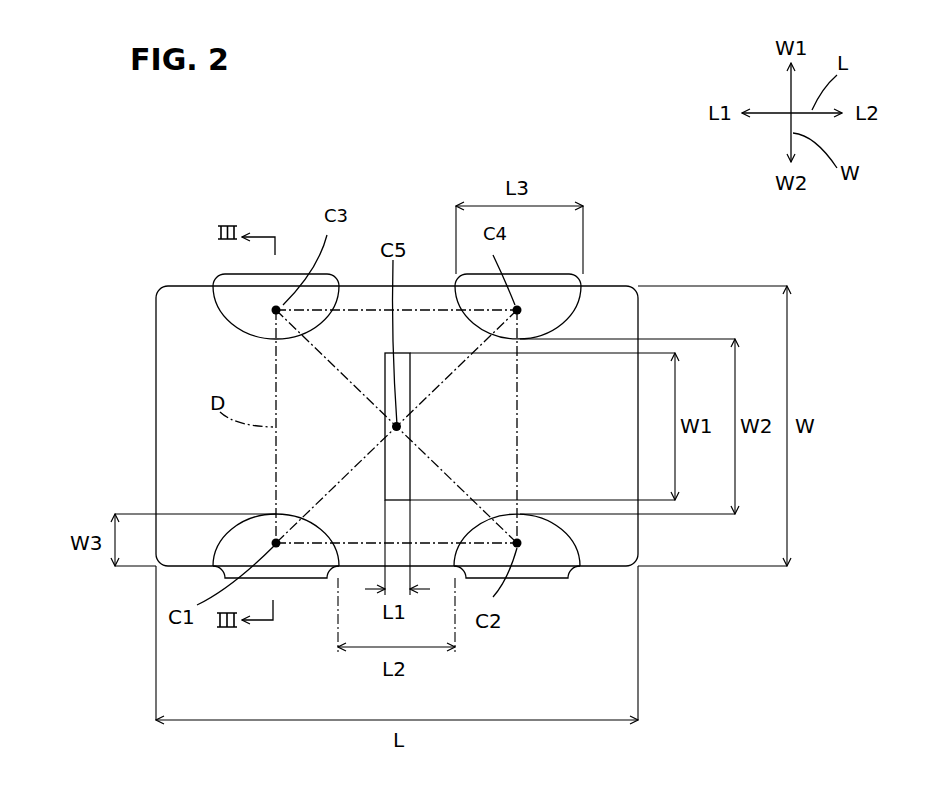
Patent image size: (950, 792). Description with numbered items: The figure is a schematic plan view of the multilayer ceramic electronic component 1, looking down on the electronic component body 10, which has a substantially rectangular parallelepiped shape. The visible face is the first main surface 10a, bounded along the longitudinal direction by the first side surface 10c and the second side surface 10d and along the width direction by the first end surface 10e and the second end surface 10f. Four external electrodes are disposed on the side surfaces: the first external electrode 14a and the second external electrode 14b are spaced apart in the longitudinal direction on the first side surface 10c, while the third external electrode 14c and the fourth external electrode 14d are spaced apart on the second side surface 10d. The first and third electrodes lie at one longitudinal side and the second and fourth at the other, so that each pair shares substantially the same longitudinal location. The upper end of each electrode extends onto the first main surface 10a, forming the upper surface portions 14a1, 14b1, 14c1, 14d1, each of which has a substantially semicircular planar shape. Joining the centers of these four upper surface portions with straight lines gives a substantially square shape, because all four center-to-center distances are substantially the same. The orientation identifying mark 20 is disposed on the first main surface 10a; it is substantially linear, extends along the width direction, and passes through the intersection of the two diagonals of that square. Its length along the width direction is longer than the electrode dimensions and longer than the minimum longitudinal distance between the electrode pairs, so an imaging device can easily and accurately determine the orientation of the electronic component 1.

The electronic component 1 is at (582, 163).
The electronic component body 10 is at (364, 282).
The first main surface 10a is at (167, 445).
The first side surface 10c is at (600, 568).
The second side surface 10d is at (610, 286).
The first end surface 10e is at (155, 388).
The second end surface 10f is at (638, 532).
The first external electrode 14a is at (276, 615).
The upper surface portion 14a1 is at (280, 565).
The second external electrode 14b is at (527, 603).
The upper surface portion 14b1 is at (540, 562).
The third external electrode 14c is at (237, 252).
The upper surface portion 14c1 is at (230, 278).
The fourth external electrode 14d is at (571, 264).
The upper surface portion 14d1 is at (550, 290).
The orientation identifying mark 20 is at (403, 352).